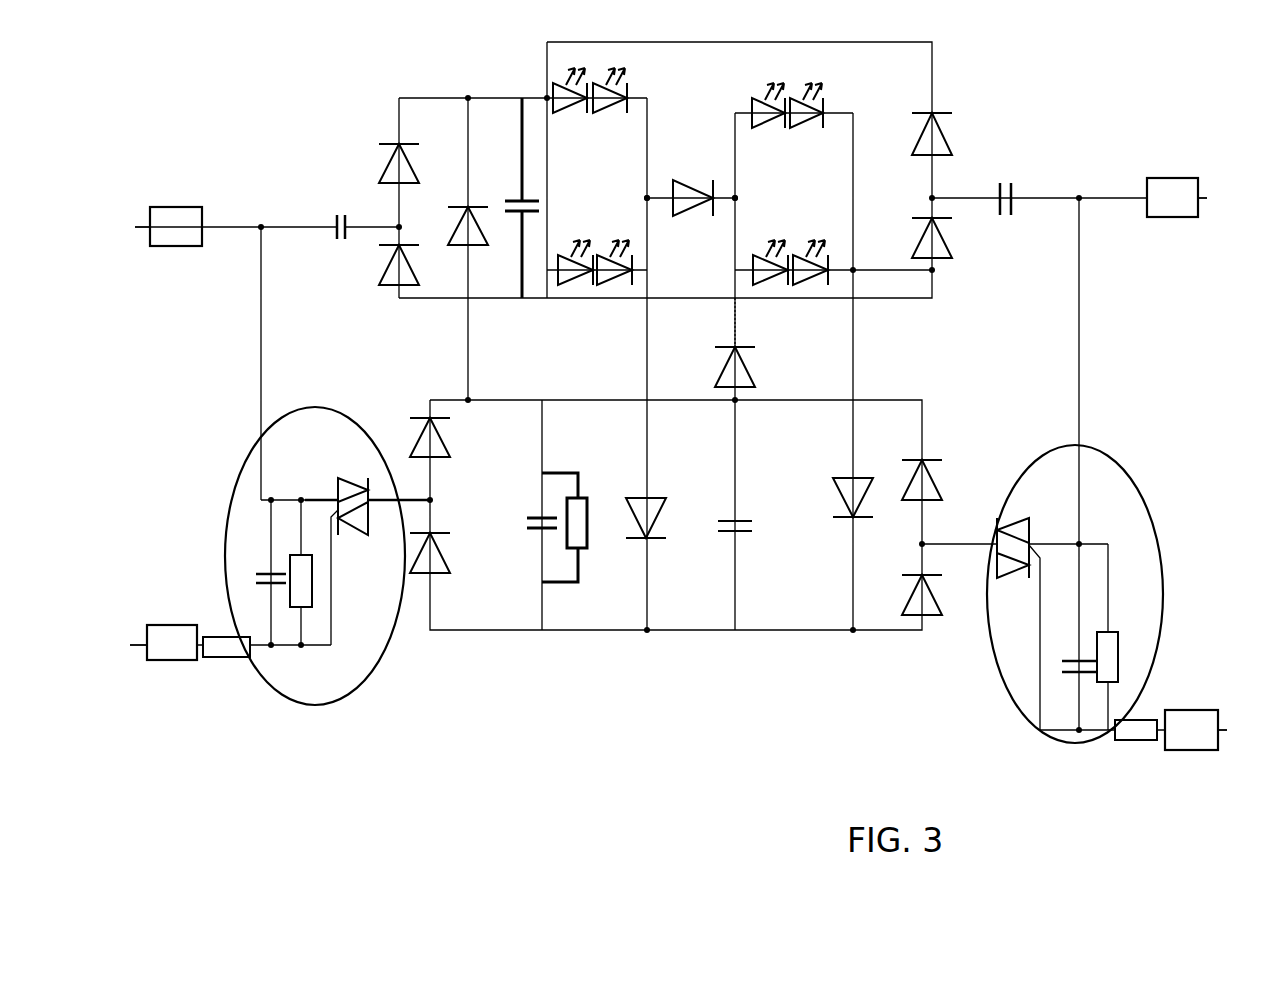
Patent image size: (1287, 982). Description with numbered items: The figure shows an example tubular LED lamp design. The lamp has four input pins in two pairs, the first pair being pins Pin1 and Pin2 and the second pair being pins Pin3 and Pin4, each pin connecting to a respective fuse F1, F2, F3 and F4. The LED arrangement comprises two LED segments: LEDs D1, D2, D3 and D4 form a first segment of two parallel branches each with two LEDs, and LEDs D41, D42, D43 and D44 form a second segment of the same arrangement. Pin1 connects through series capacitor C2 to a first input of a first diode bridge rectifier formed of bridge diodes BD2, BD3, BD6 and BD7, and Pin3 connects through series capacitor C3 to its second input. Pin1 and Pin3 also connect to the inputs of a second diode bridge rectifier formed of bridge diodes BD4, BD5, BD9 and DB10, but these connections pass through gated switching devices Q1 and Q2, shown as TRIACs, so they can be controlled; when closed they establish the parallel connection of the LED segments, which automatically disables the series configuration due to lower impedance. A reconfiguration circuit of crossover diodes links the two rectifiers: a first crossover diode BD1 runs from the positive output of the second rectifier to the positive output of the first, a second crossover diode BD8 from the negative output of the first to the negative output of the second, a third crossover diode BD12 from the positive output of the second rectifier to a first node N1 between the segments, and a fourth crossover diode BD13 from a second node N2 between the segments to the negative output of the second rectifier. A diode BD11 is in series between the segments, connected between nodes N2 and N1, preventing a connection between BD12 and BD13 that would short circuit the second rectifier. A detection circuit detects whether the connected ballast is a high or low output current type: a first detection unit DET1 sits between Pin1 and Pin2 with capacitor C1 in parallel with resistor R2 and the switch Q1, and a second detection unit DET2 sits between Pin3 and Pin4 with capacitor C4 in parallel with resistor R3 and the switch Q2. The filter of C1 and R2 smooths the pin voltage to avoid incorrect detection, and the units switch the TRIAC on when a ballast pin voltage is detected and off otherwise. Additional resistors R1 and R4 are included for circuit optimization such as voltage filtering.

The input pin Pin1 is at (121, 229).
The fuse F1 is at (176, 212).
The series capacitor C2 is at (341, 210).
The bridge diode BD2 is at (420, 163).
The bridge diode BD3 is at (376, 283).
The first crossover diode BD1 is at (450, 226).
The LED D1 is at (570, 105).
The LED D2 is at (611, 105).
The LED D3 is at (575, 248).
The LED D4 is at (615, 248).
The second node N2 is at (631, 187).
The first node N1 is at (751, 191).
The series diode BD11 is at (703, 190).
The LED D41 is at (772, 123).
The LED D42 is at (819, 123).
The LED D43 is at (771, 251).
The LED D44 is at (820, 251).
The bridge diode BD6 is at (954, 134).
The bridge diode BD7 is at (954, 238).
The series capacitor C3 is at (1007, 186).
The fuse F3 is at (1172, 184).
The input pin Pin3 is at (1228, 201).
The third crossover diode BD12 is at (769, 364).
The bridge diode BD4 is at (457, 442).
The bridge diode BD5 is at (456, 553).
The fourth crossover diode BD13 is at (672, 505).
The second crossover diode BD8 is at (826, 501).
The bridge diode BD9 is at (948, 480).
The bridge diode DB10 is at (901, 582).
The second detection unit DET2 is at (1085, 594).
The gated switching device Q2 is at (1023, 532).
The resistor R3 is at (1118, 642).
The capacitor C4 is at (1070, 650).
The resistor R4 is at (1136, 747).
The fuse F4 is at (1191, 718).
The input pin Pin4 is at (1248, 734).
The first detection unit DET1 is at (290, 556).
The gated switching device Q1 is at (359, 495).
The capacitor C1 is at (262, 564).
The resistor R2 is at (310, 569).
The fuse F2 is at (172, 627).
The input pin Pin2 is at (113, 646).
The resistor R1 is at (228, 666).